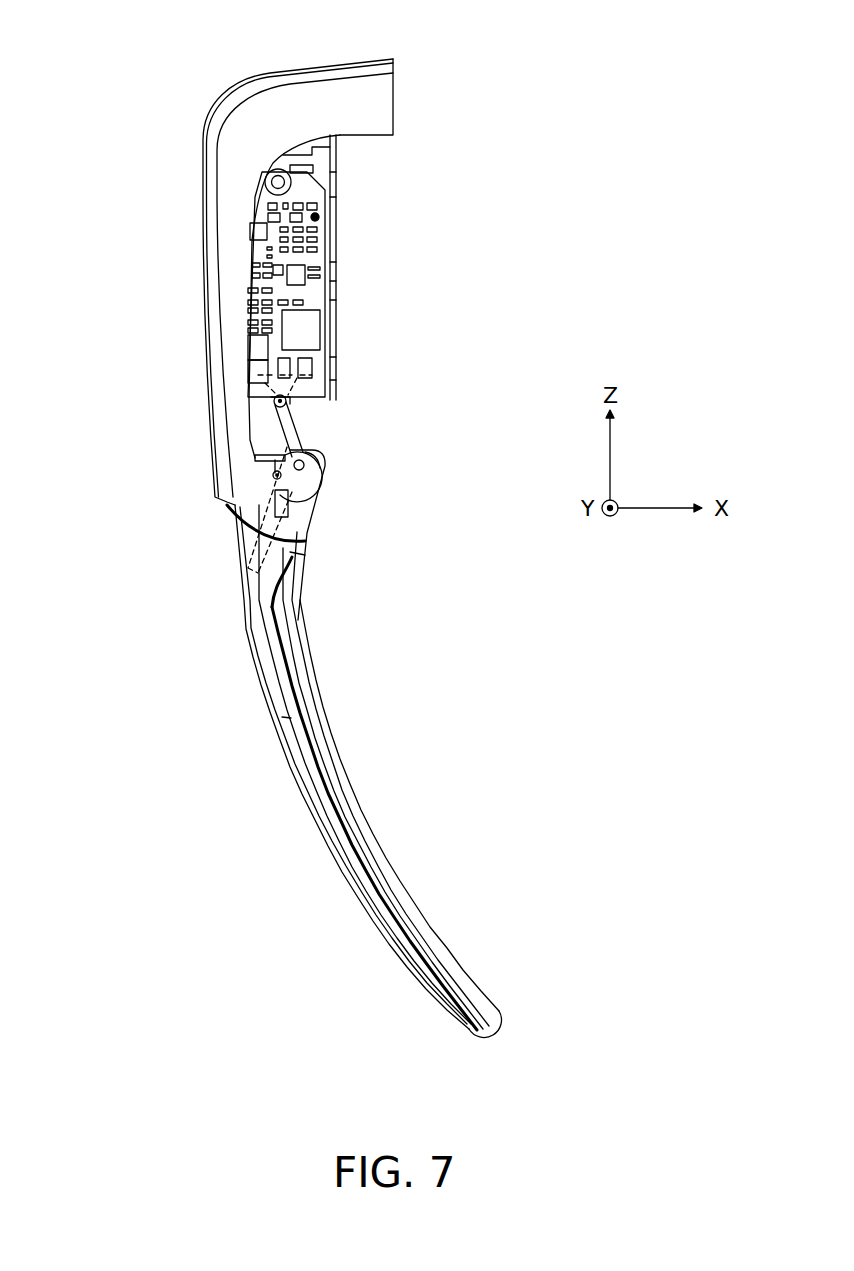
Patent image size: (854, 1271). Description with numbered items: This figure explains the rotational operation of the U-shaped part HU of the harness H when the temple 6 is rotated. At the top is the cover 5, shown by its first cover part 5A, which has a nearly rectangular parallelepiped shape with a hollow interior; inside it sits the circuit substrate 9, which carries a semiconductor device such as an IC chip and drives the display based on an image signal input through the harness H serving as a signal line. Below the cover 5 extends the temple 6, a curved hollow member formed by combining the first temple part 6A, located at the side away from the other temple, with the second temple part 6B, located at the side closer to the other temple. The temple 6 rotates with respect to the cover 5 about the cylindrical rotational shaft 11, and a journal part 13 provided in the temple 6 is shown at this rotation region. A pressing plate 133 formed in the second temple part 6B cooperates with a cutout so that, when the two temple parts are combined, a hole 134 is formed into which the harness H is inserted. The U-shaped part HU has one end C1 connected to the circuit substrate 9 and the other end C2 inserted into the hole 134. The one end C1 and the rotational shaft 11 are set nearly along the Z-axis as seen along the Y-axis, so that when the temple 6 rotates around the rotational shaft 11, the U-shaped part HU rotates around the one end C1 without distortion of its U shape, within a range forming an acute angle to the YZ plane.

The first cover part 5A is at (217, 229).
The cover 5 is at (229, 282).
The circuit substrate 9 is at (318, 260).
The one end C1 is at (298, 375).
The U-shaped part HU is at (349, 484).
The harness H is at (349, 484).
The other end C2 is at (304, 453).
The hole 134 is at (323, 463).
The pressing plate 133 is at (320, 478).
The journal part 13 is at (331, 535).
The rotational shaft 11 is at (273, 475).
The temple 6 is at (344, 771).
The first temple part 6A is at (302, 755).
The second temple part 6B is at (365, 830).